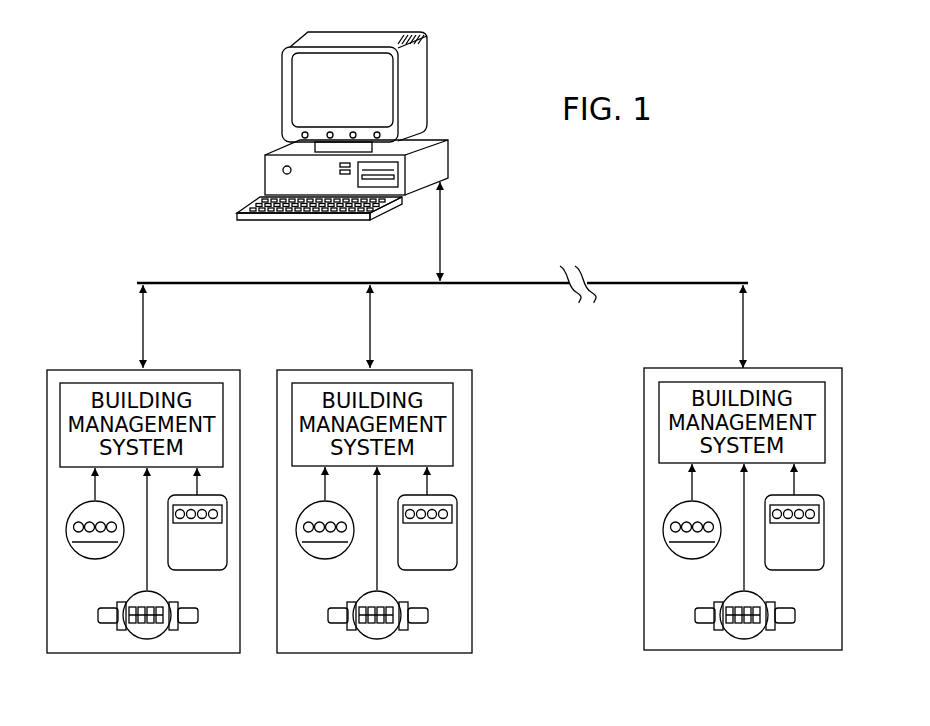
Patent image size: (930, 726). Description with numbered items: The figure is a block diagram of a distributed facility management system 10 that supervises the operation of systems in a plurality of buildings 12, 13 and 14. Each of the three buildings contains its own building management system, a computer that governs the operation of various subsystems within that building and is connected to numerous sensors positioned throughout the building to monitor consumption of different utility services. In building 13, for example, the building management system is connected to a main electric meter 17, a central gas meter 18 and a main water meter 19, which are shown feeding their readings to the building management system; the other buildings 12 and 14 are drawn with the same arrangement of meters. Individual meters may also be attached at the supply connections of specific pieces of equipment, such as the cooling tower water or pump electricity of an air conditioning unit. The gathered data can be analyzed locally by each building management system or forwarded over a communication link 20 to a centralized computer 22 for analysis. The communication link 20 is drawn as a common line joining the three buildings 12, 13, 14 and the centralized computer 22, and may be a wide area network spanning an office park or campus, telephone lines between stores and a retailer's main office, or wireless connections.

The distributed facility management system 10 is at (531, 216).
The building 12 is at (122, 370).
The building 13 is at (348, 370).
The building 14 is at (717, 368).
The main electric meter 17 is at (338, 560).
The central gas meter 18 is at (414, 570).
The main water meter 19 is at (366, 632).
The communication link 20 is at (230, 283).
The centralized computer 22 is at (265, 182).